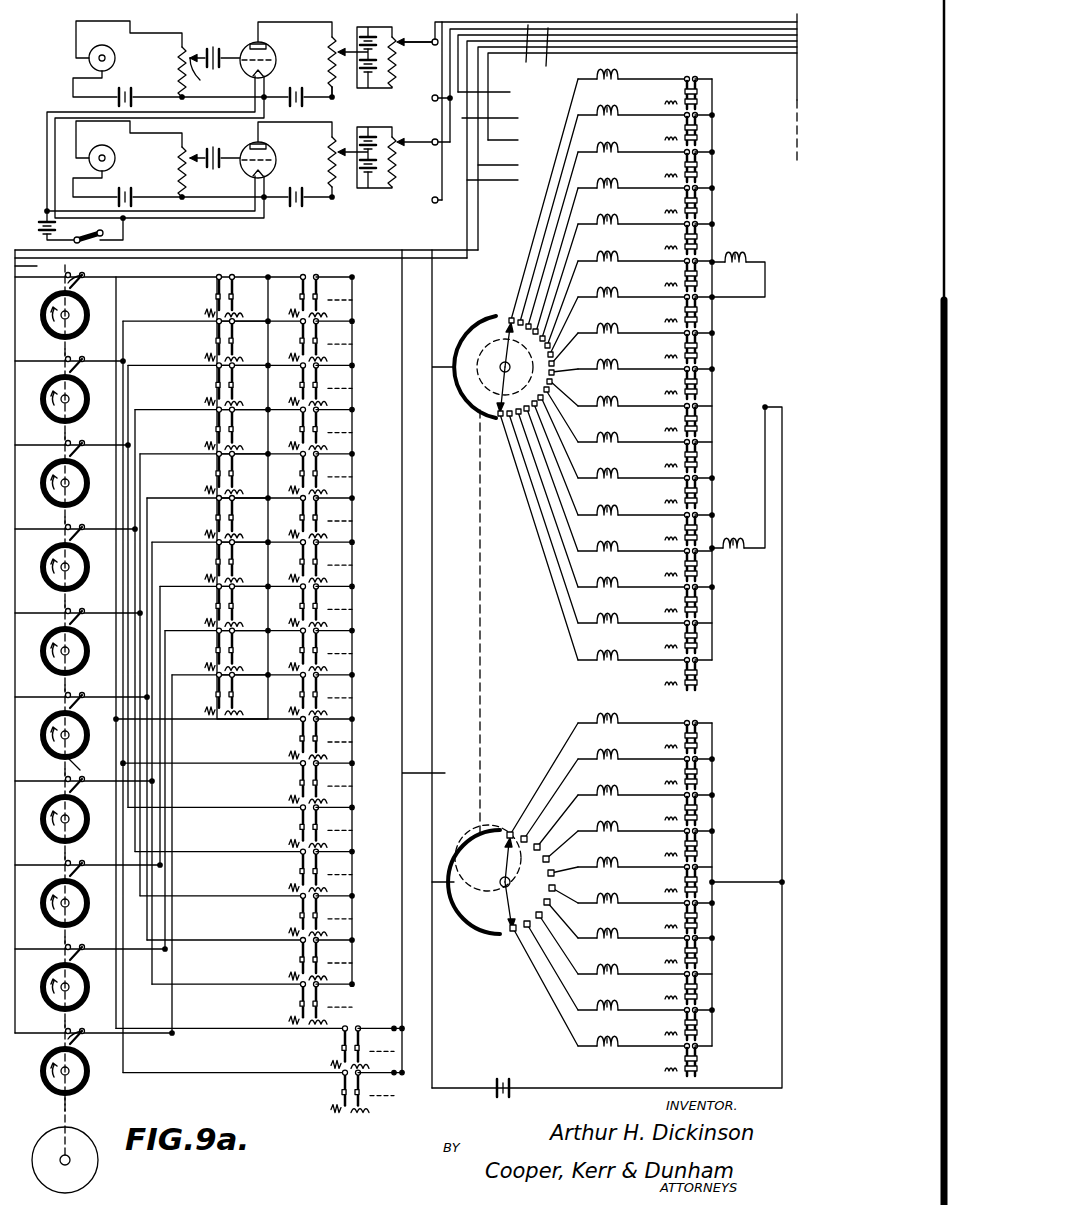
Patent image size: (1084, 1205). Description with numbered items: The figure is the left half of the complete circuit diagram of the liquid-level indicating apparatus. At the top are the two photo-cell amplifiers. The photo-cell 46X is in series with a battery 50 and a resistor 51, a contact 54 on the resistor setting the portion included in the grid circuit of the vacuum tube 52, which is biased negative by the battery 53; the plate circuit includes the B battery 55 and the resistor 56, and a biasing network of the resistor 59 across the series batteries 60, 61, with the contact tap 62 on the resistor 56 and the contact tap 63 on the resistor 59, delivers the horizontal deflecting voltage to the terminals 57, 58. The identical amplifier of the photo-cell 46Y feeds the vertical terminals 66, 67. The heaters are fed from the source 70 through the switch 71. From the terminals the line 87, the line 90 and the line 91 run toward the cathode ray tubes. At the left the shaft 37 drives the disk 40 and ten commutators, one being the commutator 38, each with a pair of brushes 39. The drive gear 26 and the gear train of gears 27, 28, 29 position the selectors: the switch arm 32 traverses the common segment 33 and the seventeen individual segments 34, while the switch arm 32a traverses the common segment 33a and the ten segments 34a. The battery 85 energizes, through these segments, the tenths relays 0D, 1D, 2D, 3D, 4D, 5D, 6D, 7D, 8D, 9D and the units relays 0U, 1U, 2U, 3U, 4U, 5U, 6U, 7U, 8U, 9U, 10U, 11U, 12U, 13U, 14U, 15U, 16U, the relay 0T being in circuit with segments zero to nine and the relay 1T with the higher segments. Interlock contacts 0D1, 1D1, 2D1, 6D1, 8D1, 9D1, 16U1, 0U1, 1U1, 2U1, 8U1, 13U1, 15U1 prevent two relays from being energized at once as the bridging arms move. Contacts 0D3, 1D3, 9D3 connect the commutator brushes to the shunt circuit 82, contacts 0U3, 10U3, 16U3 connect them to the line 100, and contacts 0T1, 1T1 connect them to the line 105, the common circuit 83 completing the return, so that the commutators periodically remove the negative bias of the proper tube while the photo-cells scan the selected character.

The photo-cell 46X is at (98, 48).
The photo-cell 46Y is at (98, 148).
The battery 50 is at (132, 92).
The resistor 51 is at (183, 49).
The vacuum tube 52 is at (268, 51).
The battery 53 is at (217, 50).
The contact 54 is at (206, 76).
The B battery 55 is at (296, 91).
The resistor 56 is at (330, 57).
The terminal 57 is at (436, 48).
The terminal 58 is at (434, 96).
The resistor 59 is at (404, 46).
The battery 60 is at (363, 42).
The battery 61 is at (380, 74).
The contact tap 62 is at (347, 90).
The contact tap 63 is at (403, 62).
The terminal 66 is at (434, 139).
The terminal 67 is at (434, 197).
The source 70 is at (32, 224).
The switch 71 is at (116, 238).
The shunt circuit 82 is at (307, 252).
The common circuit 83 is at (277, 221).
The line 87 is at (526, 52).
The line 90 is at (552, 56).
The line 91 is at (494, 92).
The line 100 is at (430, 312).
The line 105 is at (475, 590).
The commutator 38 is at (54, 332).
The brushes 39 is at (70, 276).
The shaft 37 is at (85, 768).
The disk 40 is at (98, 1170).
The gear 28 is at (501, 428).
The gear 29 is at (456, 342).
The switch arm 32 is at (488, 343).
The common conducting segment 33 is at (472, 410).
The individual segments 34 is at (510, 316).
The gear 26 is at (460, 904).
The gear 27 is at (462, 824).
The switch arm 32a is at (500, 872).
The common segment 33a is at (482, 934).
The individual segments 34a is at (512, 832).
The battery 85 is at (506, 1078).
The 0D relay 0D is at (446, 499).
The 1D relay 1D is at (446, 539).
The 2D relay 2D is at (446, 579).
The 3D relay 3D is at (446, 619).
The 4D relay 4D is at (446, 659).
The 5D relay 5D is at (446, 700).
The 6D relay 6D is at (446, 739).
The 7D relay 7D is at (446, 779).
The 8D relay 8D is at (446, 819).
The 9D relay 9D is at (446, 859).
The 0D3 contacts 0D3 is at (218, 288).
The 1D3 contacts 1D3 is at (218, 332).
The 9D3 contacts 9D3 is at (218, 686).
The 0U relay 0U is at (488, 190).
The 1U relay 1U is at (488, 230).
The 2U relay 2U is at (488, 270).
The 3U relay 3U is at (488, 311).
The 4U relay 4U is at (488, 351).
The 5U relay 5U is at (488, 391).
The 6U relay 6U is at (488, 431).
The 7U relay 7U is at (488, 471).
The 8U relay 8U is at (488, 512).
The 9U relay 9U is at (488, 552).
The 10U relay 10U is at (488, 592).
The 11U relay 11U is at (488, 632).
The 12U relay 12U is at (488, 673).
The 13U relay 13U is at (488, 713).
The 14U relay 14U is at (488, 753).
The 15U relay 15U is at (488, 793).
The 16U relay 16U is at (488, 834).
The 0U3 contacts 0U3 is at (368, 284).
The 10U3 contacts 10U3 is at (303, 736).
The 16U3 contacts 16U3 is at (303, 995).
The 0T relay 0T is at (372, 1052).
The 1T relay 1T is at (372, 1092).
The 0T1 contacts 0T1 is at (345, 1036).
The 1T1 contacts 1T1 is at (345, 1080).
The 16U1 contacts 16U1 is at (712, 90).
The 0U1 contacts 0U1 is at (712, 126).
The 1U1 contacts 1U1 is at (712, 163).
The 2U1 contacts 2U1 is at (712, 199).
The 8U1 contacts 8U1 is at (712, 416).
The 13U1 contacts 13U1 is at (712, 598).
The 15U1 contacts 15U1 is at (712, 668).
The 9D1 contacts 9D1 is at (712, 734).
The 0D1 contacts 0D1 is at (712, 770).
The 1D1 contacts 1D1 is at (712, 806).
The 2D1 contacts 2D1 is at (712, 843).
The 6D1 contacts 6D1 is at (712, 985).
The 8D1 contacts 8D1 is at (712, 1061).